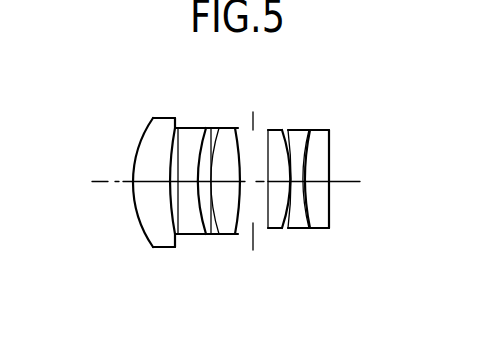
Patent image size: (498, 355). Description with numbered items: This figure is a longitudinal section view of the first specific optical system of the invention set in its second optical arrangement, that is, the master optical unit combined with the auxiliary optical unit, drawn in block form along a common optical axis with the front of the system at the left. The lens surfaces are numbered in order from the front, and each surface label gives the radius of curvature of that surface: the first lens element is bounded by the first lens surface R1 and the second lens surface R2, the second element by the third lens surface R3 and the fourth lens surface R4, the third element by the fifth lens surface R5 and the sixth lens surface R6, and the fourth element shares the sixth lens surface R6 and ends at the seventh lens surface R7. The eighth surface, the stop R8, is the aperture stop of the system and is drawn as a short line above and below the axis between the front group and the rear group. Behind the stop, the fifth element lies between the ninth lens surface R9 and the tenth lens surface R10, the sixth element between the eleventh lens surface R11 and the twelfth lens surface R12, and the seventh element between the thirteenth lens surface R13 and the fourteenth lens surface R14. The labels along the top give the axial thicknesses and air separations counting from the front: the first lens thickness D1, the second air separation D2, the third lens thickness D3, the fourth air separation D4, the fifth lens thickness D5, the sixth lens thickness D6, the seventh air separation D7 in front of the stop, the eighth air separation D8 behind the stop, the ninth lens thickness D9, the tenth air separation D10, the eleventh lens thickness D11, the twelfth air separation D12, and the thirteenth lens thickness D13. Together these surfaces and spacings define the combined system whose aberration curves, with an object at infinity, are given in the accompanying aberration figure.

The first lens surface R1 is at (152, 243).
The second lens surface R2 is at (172, 246).
The third lens surface R3 is at (182, 232).
The fourth lens surface R4 is at (200, 225).
The fifth lens surface R5 is at (209, 228).
The sixth lens surface R6 is at (223, 228).
The seventh lens surface R7 is at (237, 232).
The stop R8 is at (253, 250).
The ninth lens surface R9 is at (267, 231).
The tenth lens surface R10 is at (280, 230).
The eleventh lens surface R11 is at (290, 231).
The twelfth lens surface R12 is at (306, 230).
The thirteenth lens surface R13 is at (313, 230).
The fourteenth lens surface R14 is at (331, 230).
The first lens thickness D1 is at (152, 177).
The second air separation D2 is at (173, 172).
The third lens thickness D3 is at (186, 172).
The fourth air separation D4 is at (208, 168).
The fifth lens thickness D5 is at (215, 165).
The sixth lens thickness D6 is at (226, 165).
The seventh air separation D7 is at (243, 168).
The eighth air separation D8 is at (260, 176).
The ninth lens thickness D9 is at (280, 165).
The tenth air separation D10 is at (287, 160).
The eleventh lens thickness D11 is at (298, 165).
The twelfth air separation D12 is at (312, 168).
The thirteenth lens thickness D13 is at (322, 160).